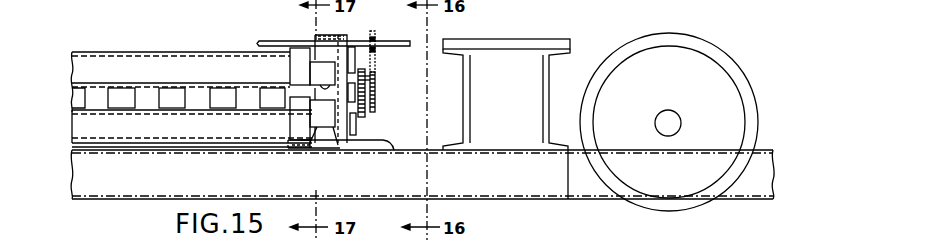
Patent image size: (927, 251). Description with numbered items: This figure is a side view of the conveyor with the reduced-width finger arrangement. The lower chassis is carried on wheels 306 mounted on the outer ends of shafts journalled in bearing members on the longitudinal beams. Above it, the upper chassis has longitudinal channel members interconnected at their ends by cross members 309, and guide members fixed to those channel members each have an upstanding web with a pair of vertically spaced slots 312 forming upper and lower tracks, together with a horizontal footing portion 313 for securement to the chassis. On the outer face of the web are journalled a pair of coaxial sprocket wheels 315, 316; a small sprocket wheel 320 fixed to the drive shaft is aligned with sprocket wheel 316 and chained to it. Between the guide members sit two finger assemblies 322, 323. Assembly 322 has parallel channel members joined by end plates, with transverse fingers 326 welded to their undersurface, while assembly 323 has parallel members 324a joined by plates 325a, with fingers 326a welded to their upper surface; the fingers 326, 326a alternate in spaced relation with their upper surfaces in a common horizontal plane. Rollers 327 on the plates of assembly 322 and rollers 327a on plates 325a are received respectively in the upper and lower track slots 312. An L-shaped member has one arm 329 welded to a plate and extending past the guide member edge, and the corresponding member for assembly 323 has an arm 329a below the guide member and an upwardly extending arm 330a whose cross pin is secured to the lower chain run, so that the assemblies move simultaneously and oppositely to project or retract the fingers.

The wheel 306 is at (672, 66).
The cross member 309 is at (470, 104).
The slot 312 is at (312, 88).
The footing portion 313 is at (393, 151).
The sprocket wheel 315 is at (365, 88).
The sprocket wheel 316 is at (375, 100).
The small sprocket wheel 320 is at (374, 37).
The finger assembly 322 is at (70, 76).
The finger assembly 323 is at (106, 147).
The parallel member 324a is at (95, 120).
The plate 325a is at (297, 120).
The finger 326 is at (164, 93).
The finger 326a is at (120, 97).
The roller 327 is at (322, 68).
The roller 327a is at (308, 148).
The arm 329 is at (297, 40).
The base part 329a is at (290, 147).
The arm 330a is at (357, 129).